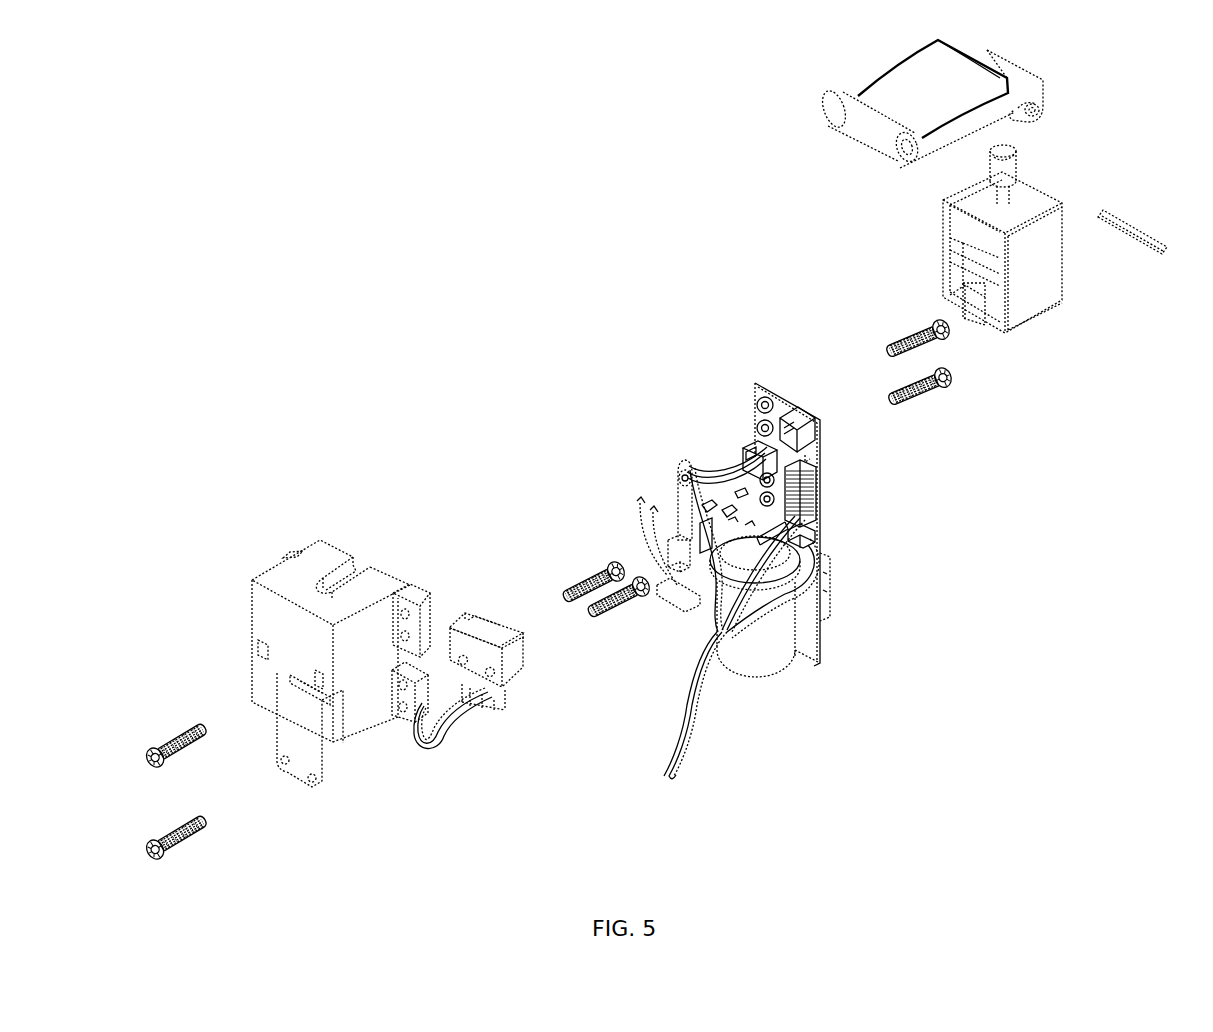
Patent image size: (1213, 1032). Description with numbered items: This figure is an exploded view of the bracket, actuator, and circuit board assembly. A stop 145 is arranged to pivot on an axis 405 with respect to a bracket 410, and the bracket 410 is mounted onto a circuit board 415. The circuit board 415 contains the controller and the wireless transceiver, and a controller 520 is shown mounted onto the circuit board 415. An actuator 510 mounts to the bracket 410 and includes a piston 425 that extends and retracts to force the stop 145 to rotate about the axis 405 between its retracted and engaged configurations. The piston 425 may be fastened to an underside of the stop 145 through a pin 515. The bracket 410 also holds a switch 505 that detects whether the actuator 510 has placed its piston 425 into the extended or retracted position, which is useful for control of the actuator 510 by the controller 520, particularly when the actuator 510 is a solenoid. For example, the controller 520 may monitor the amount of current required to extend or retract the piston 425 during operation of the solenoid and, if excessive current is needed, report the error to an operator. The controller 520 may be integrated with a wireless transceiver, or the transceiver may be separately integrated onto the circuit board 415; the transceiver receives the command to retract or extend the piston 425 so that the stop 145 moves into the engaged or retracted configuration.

The stop 145 is at (913, 90).
The axis 405 is at (907, 152).
The piston 425 is at (1015, 176).
The actuator 510 is at (1045, 282).
The pin 515 is at (1128, 232).
The bracket 410 is at (267, 618).
The switch 505 is at (522, 670).
The circuit board 415 is at (807, 542).
The controller 520 is at (673, 537).